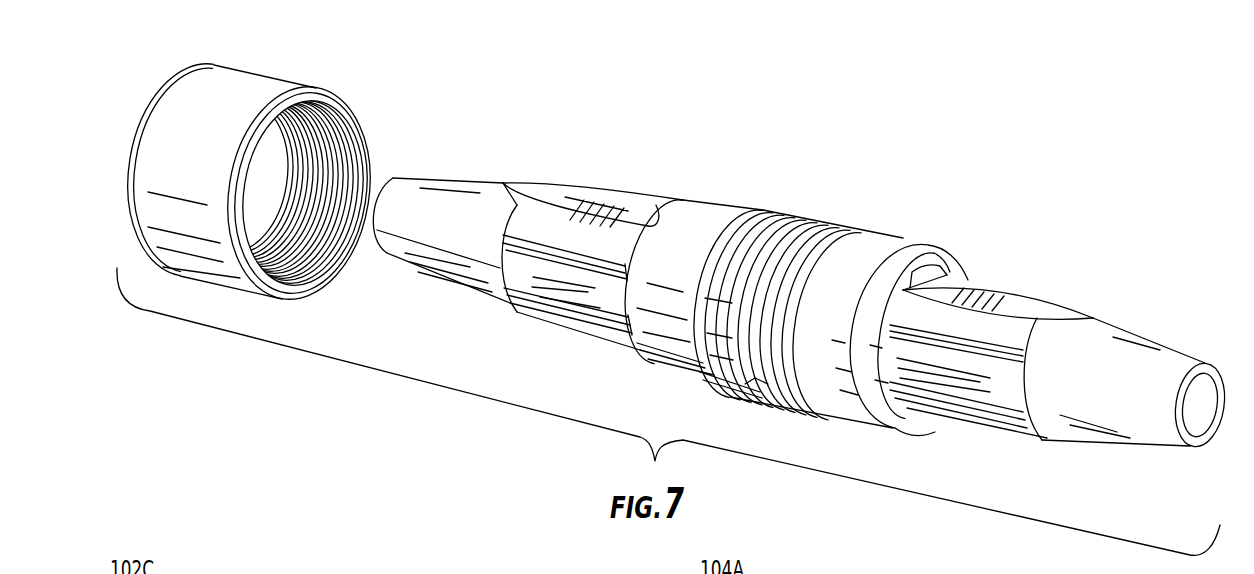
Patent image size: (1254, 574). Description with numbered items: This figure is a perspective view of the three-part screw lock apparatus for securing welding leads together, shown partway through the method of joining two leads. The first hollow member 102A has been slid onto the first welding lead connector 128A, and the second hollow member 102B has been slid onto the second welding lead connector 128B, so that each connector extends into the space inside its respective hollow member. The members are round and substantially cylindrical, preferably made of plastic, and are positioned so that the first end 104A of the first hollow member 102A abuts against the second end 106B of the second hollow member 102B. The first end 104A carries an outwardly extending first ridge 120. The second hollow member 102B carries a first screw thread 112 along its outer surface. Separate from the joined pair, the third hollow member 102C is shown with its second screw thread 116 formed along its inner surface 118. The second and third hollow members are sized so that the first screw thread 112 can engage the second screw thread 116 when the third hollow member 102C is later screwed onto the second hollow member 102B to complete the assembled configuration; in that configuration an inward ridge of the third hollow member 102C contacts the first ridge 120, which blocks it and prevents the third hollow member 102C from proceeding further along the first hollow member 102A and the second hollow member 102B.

The first hollow member 102A is at (703, 220).
The second hollow member 102B is at (905, 240).
The third hollow member 102C is at (257, 87).
The first end 104A is at (742, 370).
The second end 106B is at (745, 384).
The first screw thread 112 is at (843, 220).
The second screw thread 116 is at (327, 147).
The inner surface 118 is at (335, 266).
The first ridge 120 is at (663, 342).
The first welding lead connector 128A is at (590, 207).
The second welding lead connector 128B is at (1027, 300).